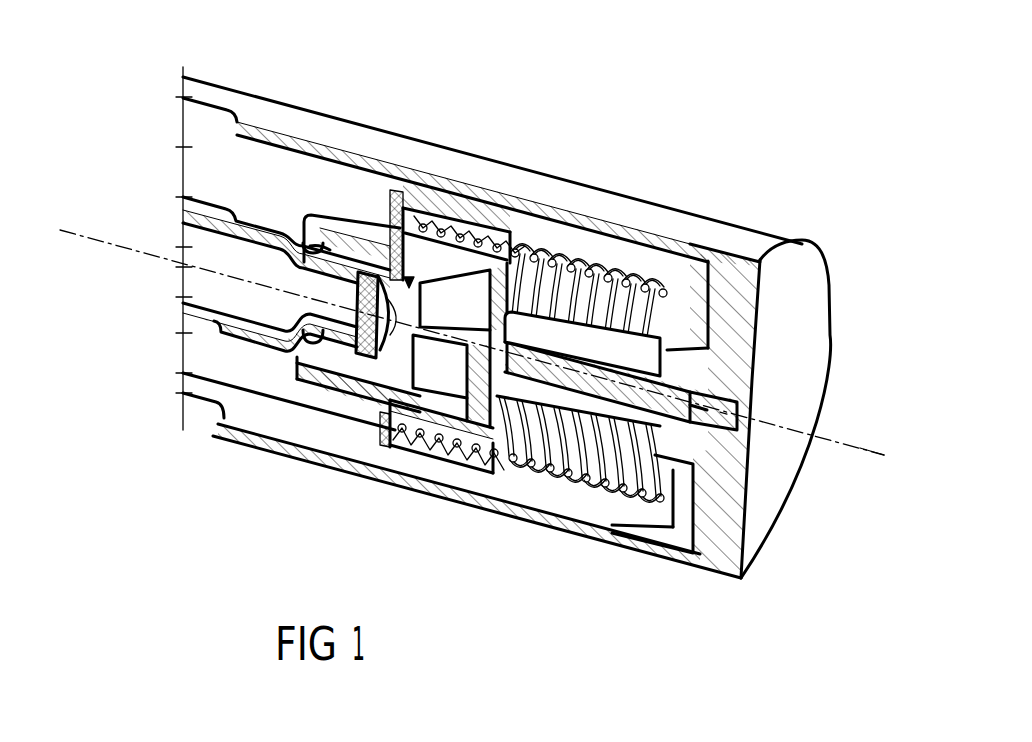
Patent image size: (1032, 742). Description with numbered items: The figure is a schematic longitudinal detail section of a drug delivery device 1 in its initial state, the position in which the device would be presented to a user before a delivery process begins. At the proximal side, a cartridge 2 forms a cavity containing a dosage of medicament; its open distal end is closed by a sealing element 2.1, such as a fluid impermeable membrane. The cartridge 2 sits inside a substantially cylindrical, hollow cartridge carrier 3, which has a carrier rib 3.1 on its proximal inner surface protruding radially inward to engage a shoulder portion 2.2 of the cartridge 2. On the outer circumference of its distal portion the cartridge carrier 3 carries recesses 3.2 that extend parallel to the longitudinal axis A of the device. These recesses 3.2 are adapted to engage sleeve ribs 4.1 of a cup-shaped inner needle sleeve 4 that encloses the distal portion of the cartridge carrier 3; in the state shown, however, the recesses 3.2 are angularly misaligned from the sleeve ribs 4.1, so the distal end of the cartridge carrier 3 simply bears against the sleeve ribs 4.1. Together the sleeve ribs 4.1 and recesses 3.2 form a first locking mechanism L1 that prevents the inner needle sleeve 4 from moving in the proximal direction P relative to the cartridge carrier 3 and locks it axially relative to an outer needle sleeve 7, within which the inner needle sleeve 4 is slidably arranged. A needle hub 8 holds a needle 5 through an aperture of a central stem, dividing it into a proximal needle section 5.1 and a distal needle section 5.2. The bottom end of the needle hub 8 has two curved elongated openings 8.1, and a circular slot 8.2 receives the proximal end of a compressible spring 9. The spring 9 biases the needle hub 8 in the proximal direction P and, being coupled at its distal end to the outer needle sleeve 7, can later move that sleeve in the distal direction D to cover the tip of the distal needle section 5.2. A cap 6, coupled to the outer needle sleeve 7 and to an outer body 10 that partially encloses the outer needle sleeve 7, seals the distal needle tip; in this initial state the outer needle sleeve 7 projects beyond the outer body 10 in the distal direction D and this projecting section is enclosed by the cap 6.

The drug delivery device 1 is at (782, 205).
The outer body 10 is at (244, 103).
The cartridge 2 is at (183, 311).
The sealing element 2.1 is at (365, 345).
The shoulder portion 2.2 is at (240, 358).
The cartridge carrier 3 is at (213, 420).
The carrier rib 3.1 is at (313, 218).
The recesses 3.2 is at (368, 230).
The inner needle sleeve 4 is at (292, 340).
The sleeve ribs 4.1 is at (472, 310).
The needle 5 is at (620, 267).
The proximal needle section 5.1 is at (462, 300).
The distal needle section 5.2 is at (745, 510).
The cap 6 is at (814, 302).
The outer needle sleeve 7 is at (678, 260).
The needle hub 8 is at (467, 463).
The openings 8.1 is at (585, 355).
The circular slot 8.2 is at (428, 445).
The spring 9 is at (612, 480).
The first locking mechanism L1 is at (409, 277).
The proximal direction P is at (461, 332).
The distal direction D is at (884, 462).
The longitudinal axis A is at (840, 444).